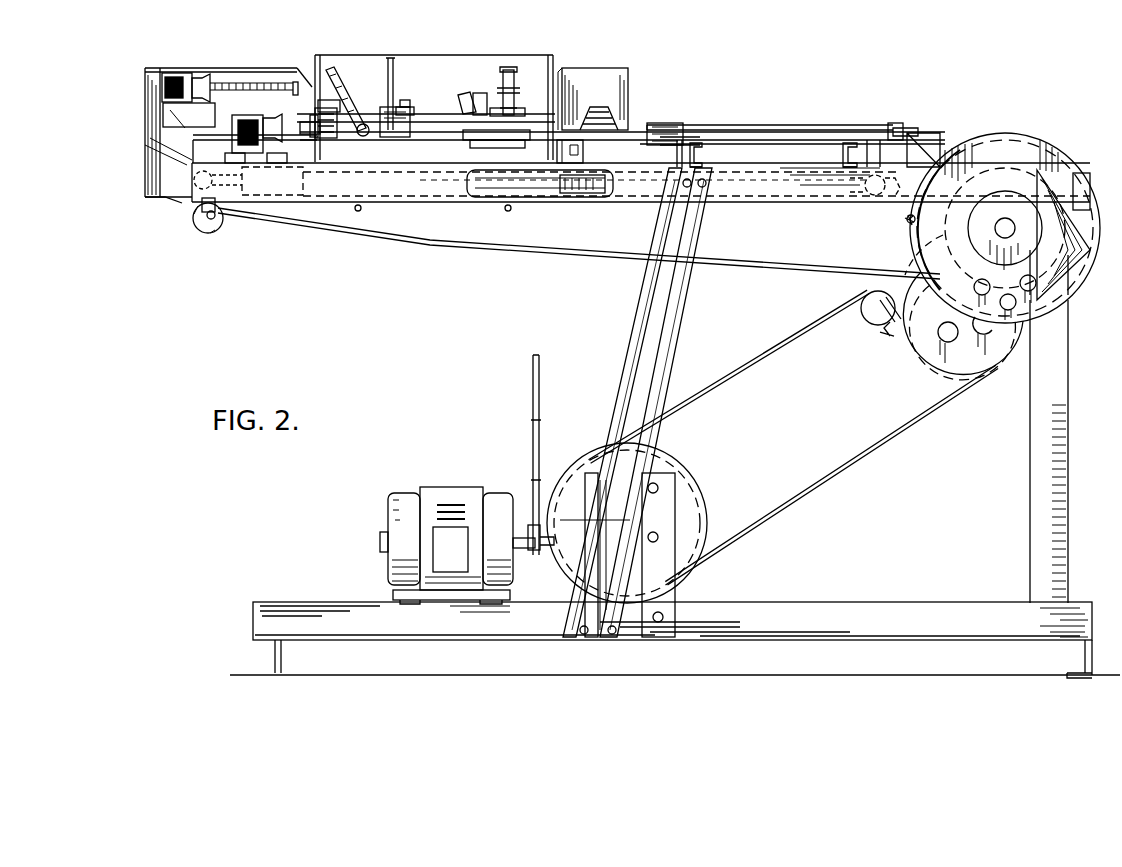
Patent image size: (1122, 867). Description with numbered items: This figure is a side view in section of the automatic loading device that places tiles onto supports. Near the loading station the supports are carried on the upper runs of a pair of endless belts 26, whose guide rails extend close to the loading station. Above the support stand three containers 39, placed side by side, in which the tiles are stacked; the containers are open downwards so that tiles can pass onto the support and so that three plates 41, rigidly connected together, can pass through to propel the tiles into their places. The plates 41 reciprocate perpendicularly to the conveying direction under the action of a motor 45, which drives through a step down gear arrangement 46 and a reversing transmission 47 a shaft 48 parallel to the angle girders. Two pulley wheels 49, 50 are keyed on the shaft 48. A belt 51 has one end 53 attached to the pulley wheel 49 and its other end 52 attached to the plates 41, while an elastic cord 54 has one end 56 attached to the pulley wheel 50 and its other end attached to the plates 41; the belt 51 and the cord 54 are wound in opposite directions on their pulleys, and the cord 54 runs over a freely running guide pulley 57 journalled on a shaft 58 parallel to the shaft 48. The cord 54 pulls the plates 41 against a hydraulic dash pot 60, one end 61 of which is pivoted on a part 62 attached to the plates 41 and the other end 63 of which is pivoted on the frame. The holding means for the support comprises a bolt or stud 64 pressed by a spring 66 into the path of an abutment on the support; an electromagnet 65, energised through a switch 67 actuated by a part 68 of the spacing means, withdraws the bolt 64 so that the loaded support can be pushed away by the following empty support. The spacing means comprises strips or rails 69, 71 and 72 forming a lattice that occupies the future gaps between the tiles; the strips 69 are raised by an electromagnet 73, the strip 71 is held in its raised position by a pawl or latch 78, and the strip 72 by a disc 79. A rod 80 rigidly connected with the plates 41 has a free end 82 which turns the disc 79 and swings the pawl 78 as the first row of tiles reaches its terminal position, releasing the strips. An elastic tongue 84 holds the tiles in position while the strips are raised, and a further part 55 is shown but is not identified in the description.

The endless belts 26 is at (357, 211).
The containers 39 is at (620, 81).
The plates 41 is at (663, 140).
The motor 45 is at (393, 507).
The step down gear arrangement 46 is at (655, 545).
The reversing transmission 47 is at (806, 428).
The shaft 48 is at (1007, 223).
The pulley wheel 49 is at (1073, 250).
The pulley wheel 50 is at (943, 235).
The belt 51 is at (973, 135).
The end of belt 52 is at (908, 134).
The end of belt 53 is at (907, 219).
The elastic cord 54 is at (560, 254).
The disc 55 is at (917, 188).
The end of elastic cord 56 is at (1005, 228).
The guide pulley 57 is at (212, 219).
The shaft 58 is at (200, 228).
The hydraulic dash pot 60 is at (500, 192).
The end of dash pot 61 is at (870, 186).
The part 62 is at (847, 157).
The end of dash pot 63 is at (182, 203).
The bolt or stud 64 is at (330, 130).
The electromagnet 65 is at (235, 132).
The spring 66 is at (325, 113).
The switch 67 is at (297, 92).
The part of spacing means 68 is at (328, 111).
The strips or rails 69 is at (490, 139).
The strip or rail 71 is at (375, 133).
The strip or rail 72 is at (462, 130).
The electromagnet 73 is at (162, 85).
The pawl or latch 78 is at (408, 102).
The disc 79 is at (495, 88).
The rod 80 is at (720, 126).
The free end of rod 82 is at (660, 123).
The elastic tongue 84 is at (460, 103).